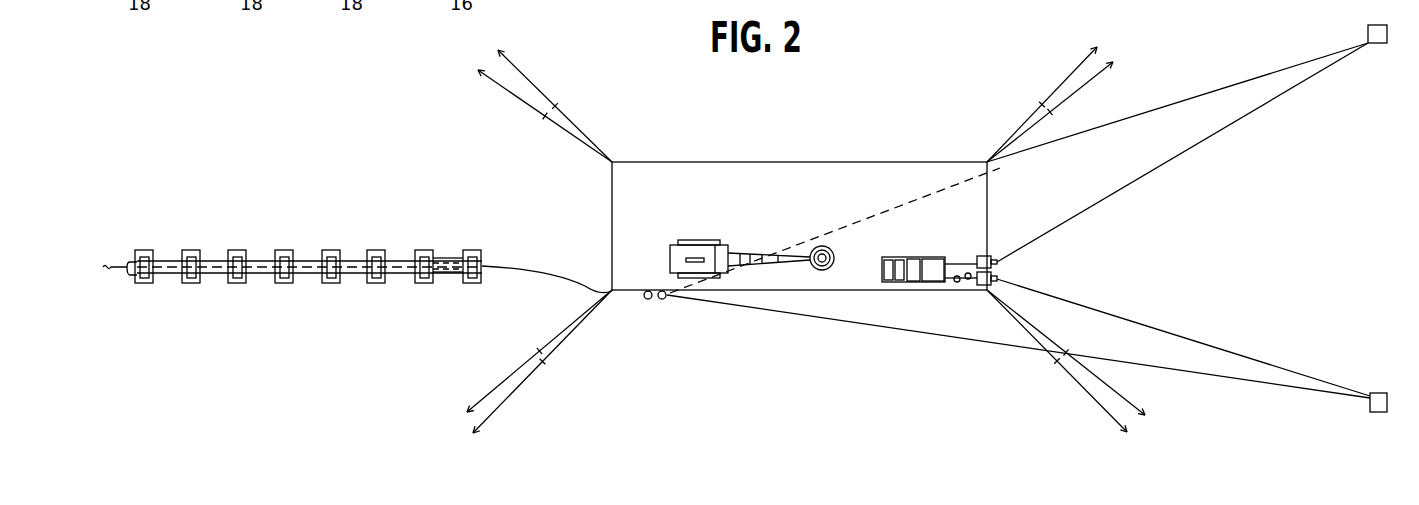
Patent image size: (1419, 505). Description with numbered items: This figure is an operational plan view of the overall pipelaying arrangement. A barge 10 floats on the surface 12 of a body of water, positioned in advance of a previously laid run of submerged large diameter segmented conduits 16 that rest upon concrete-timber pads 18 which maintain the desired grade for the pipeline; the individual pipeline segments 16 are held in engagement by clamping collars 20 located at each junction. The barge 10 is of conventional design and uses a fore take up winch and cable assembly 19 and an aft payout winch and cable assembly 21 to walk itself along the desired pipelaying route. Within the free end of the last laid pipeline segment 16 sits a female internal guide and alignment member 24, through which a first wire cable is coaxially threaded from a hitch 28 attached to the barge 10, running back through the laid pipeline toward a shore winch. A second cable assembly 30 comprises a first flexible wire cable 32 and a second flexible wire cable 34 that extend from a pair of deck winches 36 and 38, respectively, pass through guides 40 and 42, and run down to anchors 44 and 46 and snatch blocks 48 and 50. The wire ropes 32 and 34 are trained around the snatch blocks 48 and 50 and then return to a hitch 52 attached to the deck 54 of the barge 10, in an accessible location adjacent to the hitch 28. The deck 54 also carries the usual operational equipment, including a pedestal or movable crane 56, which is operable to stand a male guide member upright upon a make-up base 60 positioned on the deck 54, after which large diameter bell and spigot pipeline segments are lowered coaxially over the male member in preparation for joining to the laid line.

The barge 10 is at (921, 157).
The surface 12 is at (408, 154).
The submerged large diameter segmented conduits 16 is at (401, 260).
The concrete-timber pads 18 is at (203, 250).
The fore take up winch and cable assembly 19 is at (1035, 105).
The clamping collars 20 is at (148, 283).
The aft payout winch and cable assembly 21 is at (575, 80).
The female internal guide and alignment member 24 is at (453, 262).
The hitch 28 is at (648, 300).
The second cable assembly 30 is at (1067, 232).
The first flexible wire cable 32 is at (1138, 320).
The second flexible wire cable 34 is at (1282, 95).
The deck winch 36 is at (898, 282).
The deck winch 38 is at (914, 259).
The guide 40 is at (987, 290).
The guide 42 is at (990, 261).
The anchor 44 is at (1370, 410).
The anchor 46 is at (1381, 25).
The snatch block 48 is at (1373, 393).
The snatch block 50 is at (1366, 41).
The hitch 52 is at (662, 300).
The deck 54 is at (781, 208).
The crane 56 is at (704, 252).
The make-up base 60 is at (833, 265).